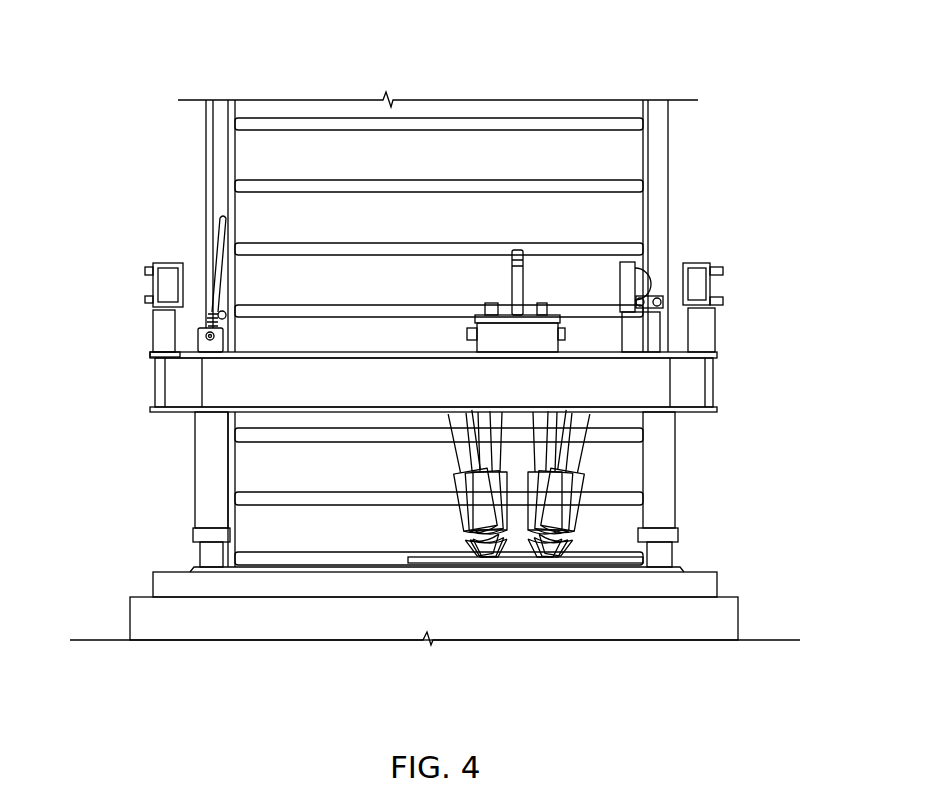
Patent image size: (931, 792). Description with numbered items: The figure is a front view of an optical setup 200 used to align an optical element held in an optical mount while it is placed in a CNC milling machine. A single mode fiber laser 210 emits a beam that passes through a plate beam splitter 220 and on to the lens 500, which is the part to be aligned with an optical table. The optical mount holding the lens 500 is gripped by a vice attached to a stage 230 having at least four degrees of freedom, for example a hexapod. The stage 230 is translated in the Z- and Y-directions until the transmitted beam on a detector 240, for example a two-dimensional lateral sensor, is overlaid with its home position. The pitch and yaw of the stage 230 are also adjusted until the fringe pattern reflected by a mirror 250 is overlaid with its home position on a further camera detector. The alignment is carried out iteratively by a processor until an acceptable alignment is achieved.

The optical setup 200 is at (306, 278).
The lens 500 is at (523, 277).
The detector 240 is at (205, 273).
The mirror 250 is at (160, 263).
The single mode fiber laser 210 is at (723, 278).
The plate beam splitter 220 is at (640, 310).
The stage 230 is at (507, 332).